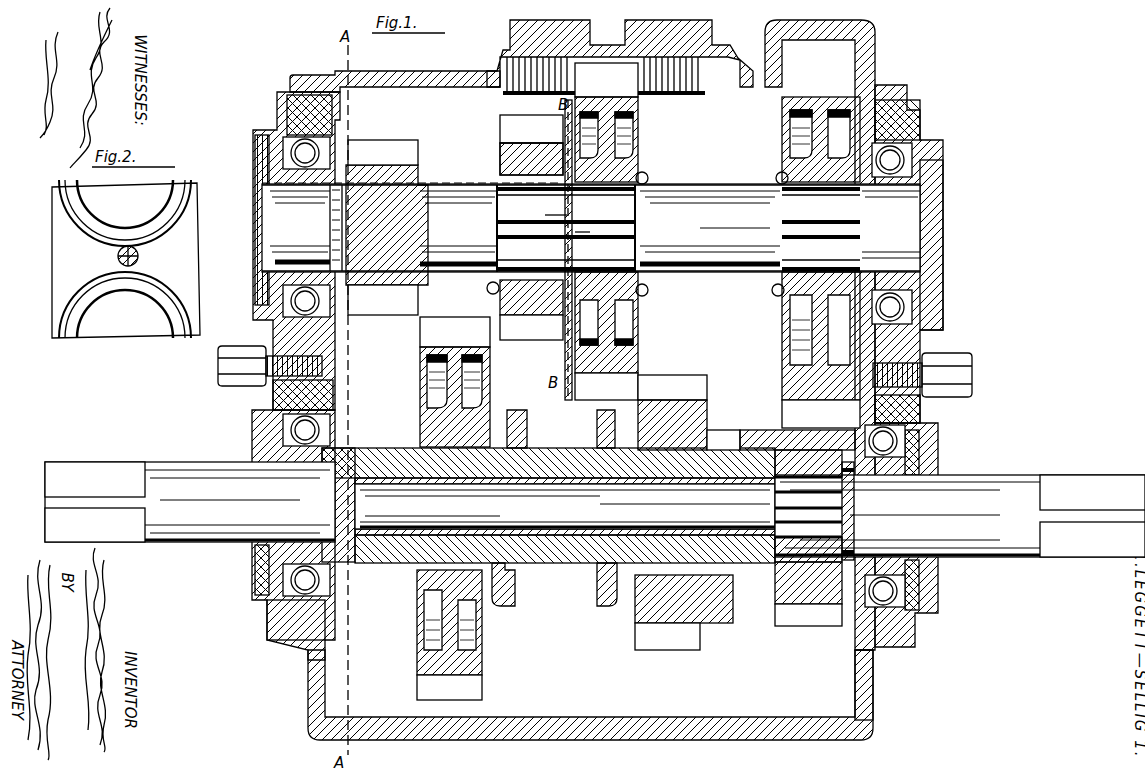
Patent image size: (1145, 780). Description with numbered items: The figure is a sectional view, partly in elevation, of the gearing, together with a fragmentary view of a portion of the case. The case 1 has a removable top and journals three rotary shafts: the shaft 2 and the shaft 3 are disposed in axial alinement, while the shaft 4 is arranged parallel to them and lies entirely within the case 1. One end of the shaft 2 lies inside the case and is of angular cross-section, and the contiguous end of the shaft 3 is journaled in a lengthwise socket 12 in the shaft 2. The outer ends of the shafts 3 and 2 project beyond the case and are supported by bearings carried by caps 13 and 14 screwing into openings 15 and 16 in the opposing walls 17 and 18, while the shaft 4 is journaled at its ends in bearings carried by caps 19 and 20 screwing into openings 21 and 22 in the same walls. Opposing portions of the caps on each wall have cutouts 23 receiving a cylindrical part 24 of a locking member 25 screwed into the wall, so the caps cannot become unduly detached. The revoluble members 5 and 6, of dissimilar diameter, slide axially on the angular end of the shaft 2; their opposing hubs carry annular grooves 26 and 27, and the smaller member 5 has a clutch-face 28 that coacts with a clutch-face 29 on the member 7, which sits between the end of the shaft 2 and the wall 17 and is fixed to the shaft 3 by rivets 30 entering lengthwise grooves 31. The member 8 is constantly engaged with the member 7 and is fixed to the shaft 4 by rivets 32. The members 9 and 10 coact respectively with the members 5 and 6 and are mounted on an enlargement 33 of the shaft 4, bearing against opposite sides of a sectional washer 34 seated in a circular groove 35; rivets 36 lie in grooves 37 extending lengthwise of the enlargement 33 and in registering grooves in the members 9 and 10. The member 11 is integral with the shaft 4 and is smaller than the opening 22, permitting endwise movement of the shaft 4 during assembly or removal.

In FIG. 2, the case 1 is at (70, 268).
In FIG. 1, the case 1 is at (321, 76).
In FIG. 1, the rotary shaft 2 is at (358, 460).
In FIG. 1, the rotary shaft 3 is at (965, 478).
In FIG. 1, the rotary shaft 4 is at (697, 205).
In FIG. 1, the revoluble member 5 is at (662, 400).
In FIG. 1, the revoluble member 6 is at (420, 375).
In FIG. 1, the revoluble member 7 is at (775, 430).
In FIG. 1, the revoluble member 8 is at (790, 120).
In FIG. 1, the revoluble member 9 is at (640, 130).
In FIG. 1, the revoluble member 10 is at (500, 132).
In FIG. 1, the revoluble member 11 is at (396, 165).
In FIG. 1, the lengthwise socket 12 is at (572, 575).
In FIG. 1, the cap 13 is at (935, 437).
In FIG. 1, the cap 14 is at (258, 430).
In FIG. 2, the opening 15 is at (105, 328).
In FIG. 1, the opening 15 is at (905, 410).
In FIG. 1, the opening 16 is at (270, 400).
In FIG. 1, the wall 17 is at (862, 672).
In FIG. 1, the wall 18 is at (330, 627).
In FIG. 2, the cap 19 is at (100, 198).
In FIG. 1, the cap 19 is at (944, 218).
In FIG. 1, the cap 20 is at (258, 272).
In FIG. 1, the opening 21 is at (910, 126).
In FIG. 1, the opening 22 is at (290, 110).
In FIG. 2, the cutout 23 is at (108, 205).
In FIG. 1, the cutout 23 is at (262, 350).
In FIG. 2, the cylindrical part 24 is at (118, 256).
In FIG. 1, the cylindrical part 24 is at (222, 370).
In FIG. 2, the locking member 25 is at (138, 256).
In FIG. 1, the locking member 25 is at (250, 382).
In FIG. 1, the annular groove 26 is at (600, 428).
In FIG. 1, the annular groove 27 is at (512, 440).
In FIG. 1, the clutch-face 28 is at (722, 430).
In FIG. 1, the clutch-face 29 is at (755, 605).
In FIG. 1, the rivets 30 is at (770, 508).
In FIG. 1, the grooves 31 is at (856, 505).
In FIG. 1, the rivets 32 is at (775, 176).
In FIG. 1, the enlargement 33 is at (500, 222).
In FIG. 1, the sectional washer 34 is at (552, 172).
In FIG. 1, the circular groove 35 is at (562, 214).
In FIG. 1, the rivets 36 is at (648, 175).
In FIG. 1, the grooves 37 is at (577, 225).